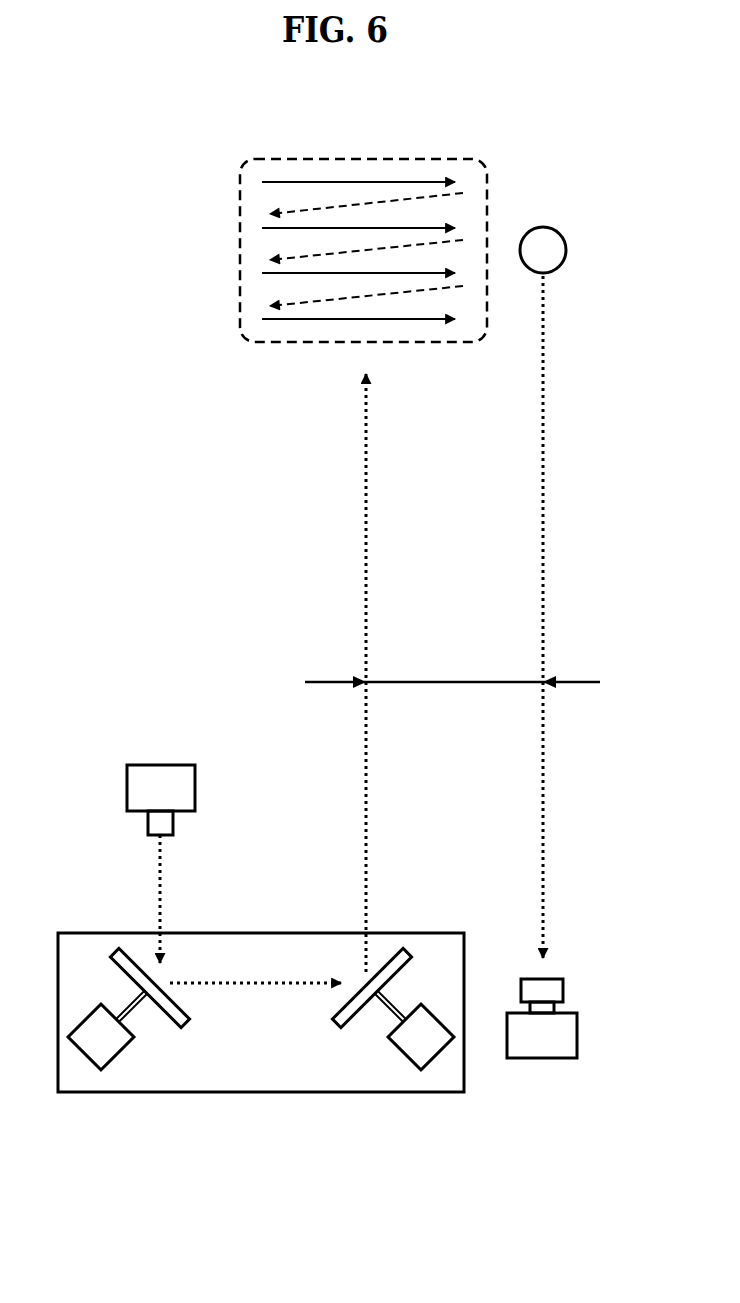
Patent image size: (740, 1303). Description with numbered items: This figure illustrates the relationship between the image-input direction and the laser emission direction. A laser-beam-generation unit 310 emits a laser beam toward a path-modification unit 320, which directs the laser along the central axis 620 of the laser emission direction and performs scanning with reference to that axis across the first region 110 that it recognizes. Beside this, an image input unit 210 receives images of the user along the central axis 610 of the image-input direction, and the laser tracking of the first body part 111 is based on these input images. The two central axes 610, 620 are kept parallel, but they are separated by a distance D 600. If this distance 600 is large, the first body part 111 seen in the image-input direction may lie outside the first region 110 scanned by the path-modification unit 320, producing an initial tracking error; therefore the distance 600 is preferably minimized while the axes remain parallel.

The first region 110 is at (357, 159).
The first body part 111 is at (535, 228).
The image input unit 210 is at (542, 1058).
The laser-beam-generation unit 310 is at (127, 787).
The path-modification unit 320 is at (257, 1092).
The distance D 600 is at (452, 717).
The central axis of the image-input direction 610 is at (545, 553).
The central axis of the laser emission direction 620 is at (365, 552).